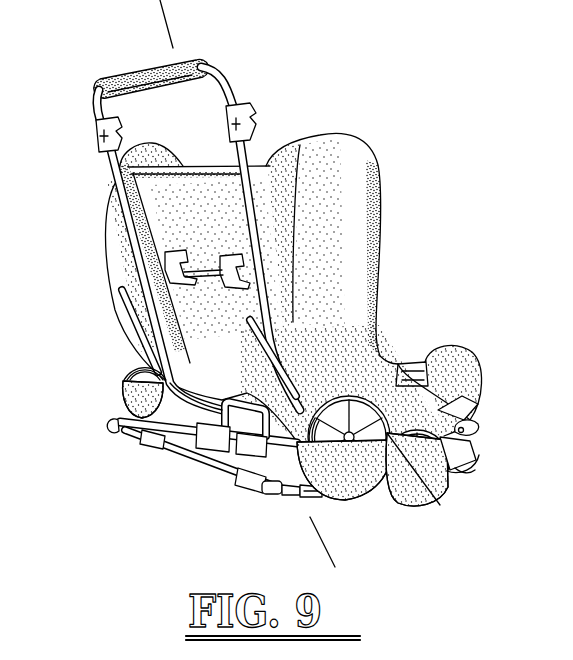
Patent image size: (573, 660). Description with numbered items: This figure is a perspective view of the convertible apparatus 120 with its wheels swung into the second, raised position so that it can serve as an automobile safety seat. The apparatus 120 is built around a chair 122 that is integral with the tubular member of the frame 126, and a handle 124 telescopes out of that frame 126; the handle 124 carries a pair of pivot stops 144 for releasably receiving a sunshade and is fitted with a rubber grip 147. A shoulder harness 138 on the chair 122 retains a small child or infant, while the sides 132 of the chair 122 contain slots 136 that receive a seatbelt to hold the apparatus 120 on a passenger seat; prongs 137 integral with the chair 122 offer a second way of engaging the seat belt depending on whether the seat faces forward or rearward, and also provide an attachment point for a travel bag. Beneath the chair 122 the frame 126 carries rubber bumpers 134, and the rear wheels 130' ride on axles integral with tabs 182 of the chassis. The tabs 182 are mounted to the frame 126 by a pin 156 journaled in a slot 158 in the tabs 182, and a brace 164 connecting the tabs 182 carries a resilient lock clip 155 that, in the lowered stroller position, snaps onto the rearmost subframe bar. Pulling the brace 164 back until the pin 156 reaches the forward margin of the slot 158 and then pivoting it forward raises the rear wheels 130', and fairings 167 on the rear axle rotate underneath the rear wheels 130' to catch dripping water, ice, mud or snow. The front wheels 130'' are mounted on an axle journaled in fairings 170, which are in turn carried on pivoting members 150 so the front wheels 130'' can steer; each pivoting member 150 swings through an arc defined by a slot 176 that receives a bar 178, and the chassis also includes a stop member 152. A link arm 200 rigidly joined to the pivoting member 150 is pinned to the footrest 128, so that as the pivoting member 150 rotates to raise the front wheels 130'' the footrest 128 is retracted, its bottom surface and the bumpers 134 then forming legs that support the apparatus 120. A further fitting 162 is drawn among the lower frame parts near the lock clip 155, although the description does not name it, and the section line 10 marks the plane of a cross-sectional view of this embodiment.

The section line 10 is at (168, 14).
The apparatus 120 is at (302, 129).
The chair 122 is at (392, 189).
The handle 124 is at (231, 86).
The frame 126 is at (192, 432).
The footrest 128 is at (474, 467).
The rear wheels 130' is at (234, 407).
The front wheels 130'' is at (415, 483).
The sides of chair 132 is at (463, 370).
The rubber bumpers 134 is at (140, 440).
The slots 136 is at (400, 367).
The prongs 137 is at (124, 317).
The shoulder harness 138 is at (166, 258).
The pivot stops 144 is at (93, 136).
The rubber grip 147 is at (141, 74).
The pivoting member 150 is at (468, 446).
The stop member 152 is at (464, 403).
The lock clip 155 is at (243, 467).
The pin 156 is at (315, 497).
The slot 158 is at (290, 496).
The connector 162 is at (268, 493).
The brace 164 is at (193, 430).
The fairings 167 is at (122, 386).
The fairings 170 is at (422, 503).
The slot 176 is at (477, 421).
The bar 178 is at (459, 437).
The tabs 182 is at (119, 425).
The link arm 200 is at (469, 474).